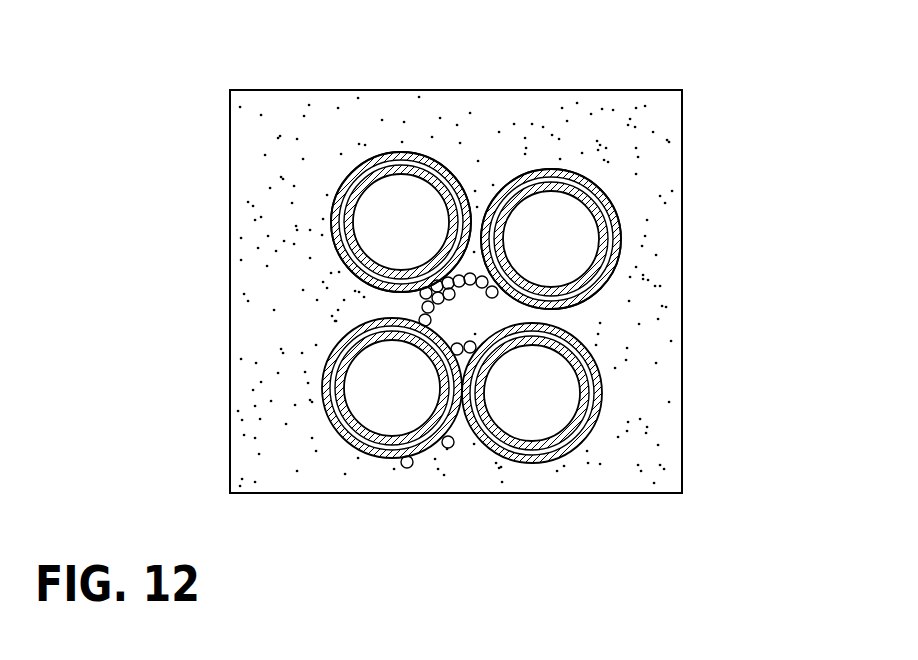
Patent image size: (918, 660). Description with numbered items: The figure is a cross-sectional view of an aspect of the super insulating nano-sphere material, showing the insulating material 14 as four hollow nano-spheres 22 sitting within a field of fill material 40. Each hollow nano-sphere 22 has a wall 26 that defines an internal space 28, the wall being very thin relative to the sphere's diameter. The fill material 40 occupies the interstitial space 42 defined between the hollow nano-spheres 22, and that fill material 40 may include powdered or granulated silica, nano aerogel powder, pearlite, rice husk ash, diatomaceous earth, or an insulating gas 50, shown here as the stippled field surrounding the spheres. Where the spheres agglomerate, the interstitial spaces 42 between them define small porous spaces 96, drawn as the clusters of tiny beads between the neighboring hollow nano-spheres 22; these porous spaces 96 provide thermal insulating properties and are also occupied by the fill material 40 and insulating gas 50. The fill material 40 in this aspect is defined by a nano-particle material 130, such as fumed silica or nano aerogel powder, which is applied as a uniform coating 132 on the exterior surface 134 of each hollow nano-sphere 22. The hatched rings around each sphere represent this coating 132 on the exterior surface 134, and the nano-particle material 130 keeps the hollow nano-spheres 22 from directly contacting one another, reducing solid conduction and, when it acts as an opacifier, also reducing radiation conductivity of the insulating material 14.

The insulating material 14 is at (222, 205).
The hollow nano-spheres 22 is at (364, 152).
The wall 26 is at (423, 449).
The internal space 28 is at (530, 403).
The fill material 40 is at (280, 390).
The interstitial space 42 is at (330, 302).
The insulating gas 50 is at (313, 157).
The porous spaces 96 is at (497, 304).
The nano-particle material 130 is at (400, 152).
The uniform coating 132 is at (595, 184).
The exterior surface 134 is at (603, 288).